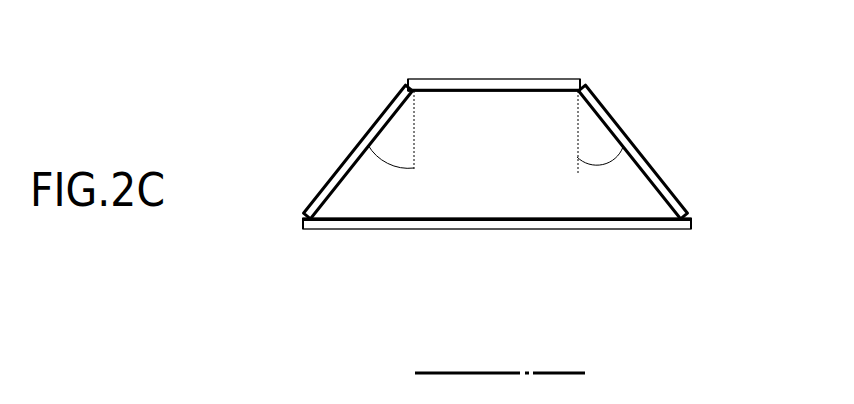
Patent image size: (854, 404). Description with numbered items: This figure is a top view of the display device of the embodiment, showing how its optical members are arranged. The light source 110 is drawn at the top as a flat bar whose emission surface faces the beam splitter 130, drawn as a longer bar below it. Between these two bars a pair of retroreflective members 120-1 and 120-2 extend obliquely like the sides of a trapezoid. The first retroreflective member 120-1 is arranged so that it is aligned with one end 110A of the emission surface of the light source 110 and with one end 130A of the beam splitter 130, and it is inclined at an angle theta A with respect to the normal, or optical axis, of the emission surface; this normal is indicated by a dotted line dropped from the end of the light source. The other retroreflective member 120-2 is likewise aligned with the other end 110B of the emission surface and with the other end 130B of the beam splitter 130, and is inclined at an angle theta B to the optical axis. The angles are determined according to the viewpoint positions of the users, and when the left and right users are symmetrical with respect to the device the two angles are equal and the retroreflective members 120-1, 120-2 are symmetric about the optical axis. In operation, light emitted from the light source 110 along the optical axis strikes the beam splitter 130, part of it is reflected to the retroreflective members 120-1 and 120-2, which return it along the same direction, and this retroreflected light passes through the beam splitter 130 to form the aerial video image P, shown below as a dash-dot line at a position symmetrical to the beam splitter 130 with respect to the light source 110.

The light source 110 is at (498, 78).
The one end of the emission surface 110A is at (411, 78).
The other end of the emission surface 110B is at (585, 78).
The retroreflective member 120-1 is at (352, 141).
The retroreflective member 120-2 is at (638, 132).
The beam splitter 130 is at (496, 230).
The one end of the beam splitter 130A is at (306, 230).
The other end of the beam splitter 130B is at (688, 230).
The aerial video image P is at (585, 373).